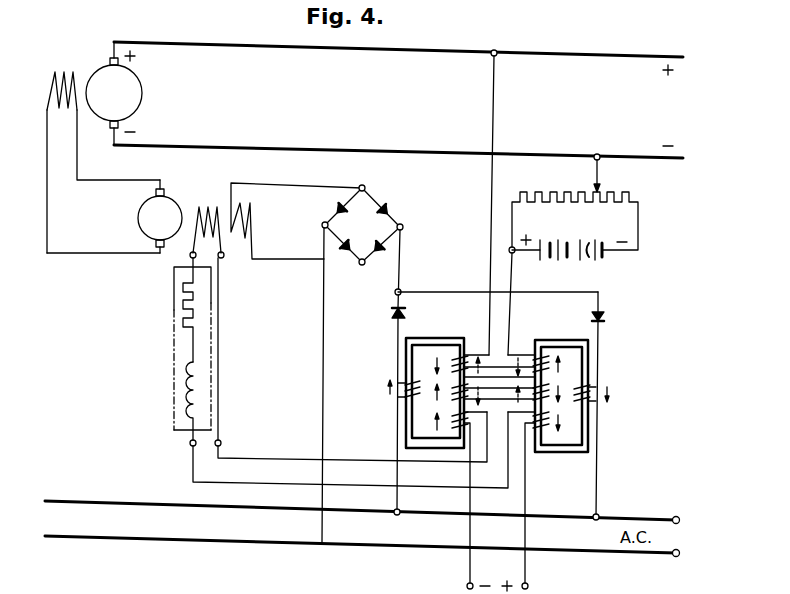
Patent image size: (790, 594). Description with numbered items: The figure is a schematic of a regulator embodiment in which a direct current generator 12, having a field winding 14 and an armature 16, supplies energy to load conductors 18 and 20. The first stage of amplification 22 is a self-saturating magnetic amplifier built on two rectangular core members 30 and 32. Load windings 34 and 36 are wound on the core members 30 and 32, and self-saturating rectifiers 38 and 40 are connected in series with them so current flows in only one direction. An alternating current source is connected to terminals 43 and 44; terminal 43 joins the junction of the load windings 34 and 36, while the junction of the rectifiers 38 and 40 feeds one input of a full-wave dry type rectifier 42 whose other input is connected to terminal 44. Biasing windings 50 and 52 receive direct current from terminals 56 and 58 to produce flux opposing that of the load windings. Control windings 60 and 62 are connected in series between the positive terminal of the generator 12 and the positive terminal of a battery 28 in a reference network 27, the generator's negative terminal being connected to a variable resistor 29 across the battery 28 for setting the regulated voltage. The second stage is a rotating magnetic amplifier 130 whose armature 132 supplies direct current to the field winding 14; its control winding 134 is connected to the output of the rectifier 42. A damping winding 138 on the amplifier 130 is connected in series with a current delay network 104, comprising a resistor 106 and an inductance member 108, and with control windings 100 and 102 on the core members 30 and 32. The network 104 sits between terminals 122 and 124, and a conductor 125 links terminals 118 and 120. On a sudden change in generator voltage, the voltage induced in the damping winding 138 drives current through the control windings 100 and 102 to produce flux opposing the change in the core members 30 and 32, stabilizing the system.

The direct current generator 12 is at (105, 36).
The field winding 14 is at (70, 72).
The armature 16 is at (142, 87).
The load conductor 18 is at (426, 50).
The load conductor 20 is at (426, 148).
The rotating magnetic amplifier 130 is at (147, 172).
The armature 132 is at (138, 217).
The control winding 134 is at (240, 212).
The damping winding 138 is at (210, 203).
The terminal 118 is at (223, 258).
The terminal 122 is at (189, 257).
The current delay network 104 is at (174, 344).
The resistor 106 is at (183, 296).
The inductance member 108 is at (184, 385).
The conductor 125 is at (221, 346).
The terminal 124 is at (189, 443).
The terminal 120 is at (222, 443).
The full-wave dry type rectifier 42 is at (383, 226).
The self-saturating rectifier 38 is at (391, 314).
The self-saturating rectifier 40 is at (606, 318).
The reference network 27 is at (672, 224).
The battery 28 is at (587, 261).
The variable resistor 29 is at (607, 192).
The core member 30 is at (430, 342).
The core member 32 is at (562, 341).
The load winding 34 is at (403, 398).
The load winding 36 is at (597, 408).
The control winding 60 is at (450, 364).
The control winding 100 is at (455, 397).
The biasing winding 50 is at (452, 432).
The control winding 62 is at (550, 366).
The control winding 102 is at (546, 396).
The biasing winding 52 is at (548, 429).
The first stage of amplification 22 is at (567, 482).
The terminal 56 is at (466, 586).
The terminal 58 is at (529, 586).
The terminal 43 is at (679, 517).
The terminal 44 is at (679, 556).